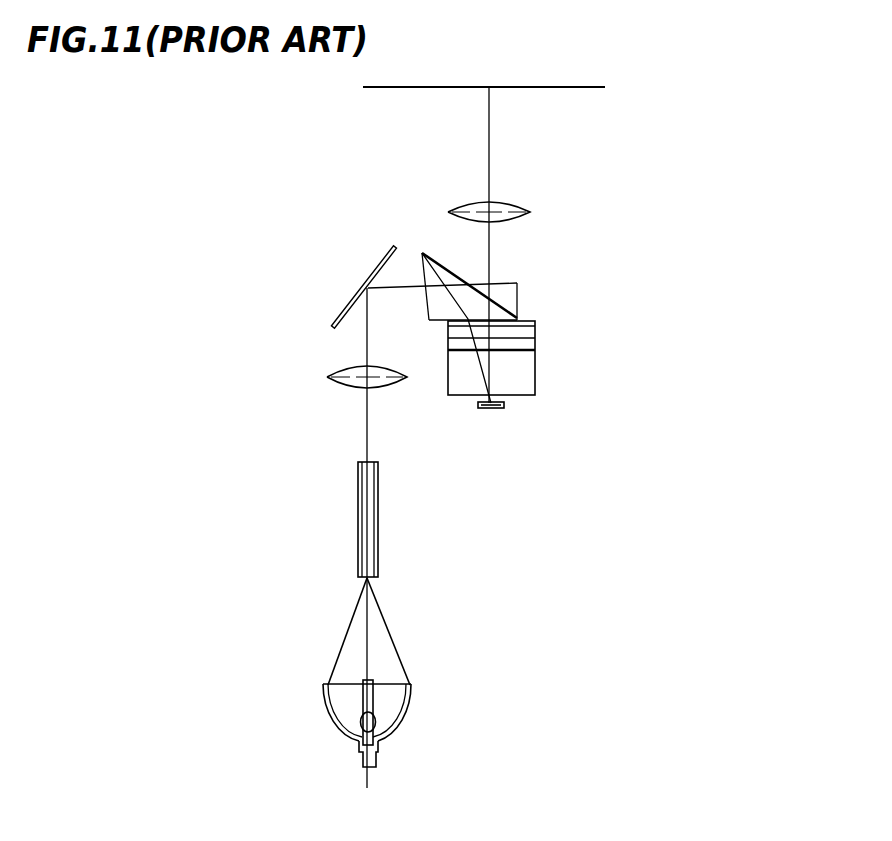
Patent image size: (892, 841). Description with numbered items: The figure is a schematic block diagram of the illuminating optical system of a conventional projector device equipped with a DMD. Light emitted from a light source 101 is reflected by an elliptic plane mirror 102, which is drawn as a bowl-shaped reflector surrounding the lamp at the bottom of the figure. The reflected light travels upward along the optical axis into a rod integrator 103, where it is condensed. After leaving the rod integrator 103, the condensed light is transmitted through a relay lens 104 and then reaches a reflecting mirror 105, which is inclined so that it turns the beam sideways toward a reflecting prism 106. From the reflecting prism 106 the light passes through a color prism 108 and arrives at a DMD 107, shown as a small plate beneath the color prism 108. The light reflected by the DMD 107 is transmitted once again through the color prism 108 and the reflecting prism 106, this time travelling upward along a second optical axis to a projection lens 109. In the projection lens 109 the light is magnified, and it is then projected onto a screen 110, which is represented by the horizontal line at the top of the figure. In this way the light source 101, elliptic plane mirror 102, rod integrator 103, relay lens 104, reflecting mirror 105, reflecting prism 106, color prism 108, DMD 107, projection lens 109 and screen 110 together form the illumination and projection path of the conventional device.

The light source 101 is at (358, 727).
The elliptic plane mirror 102 is at (351, 742).
The rod integrator 103 is at (358, 505).
The relay lens 104 is at (330, 374).
The reflecting mirror 105 is at (368, 283).
The reflecting prism 106 is at (424, 252).
The DMD 107 is at (490, 410).
The color prism 108 is at (537, 367).
The projection lens 109 is at (531, 212).
The screen 110 is at (393, 88).